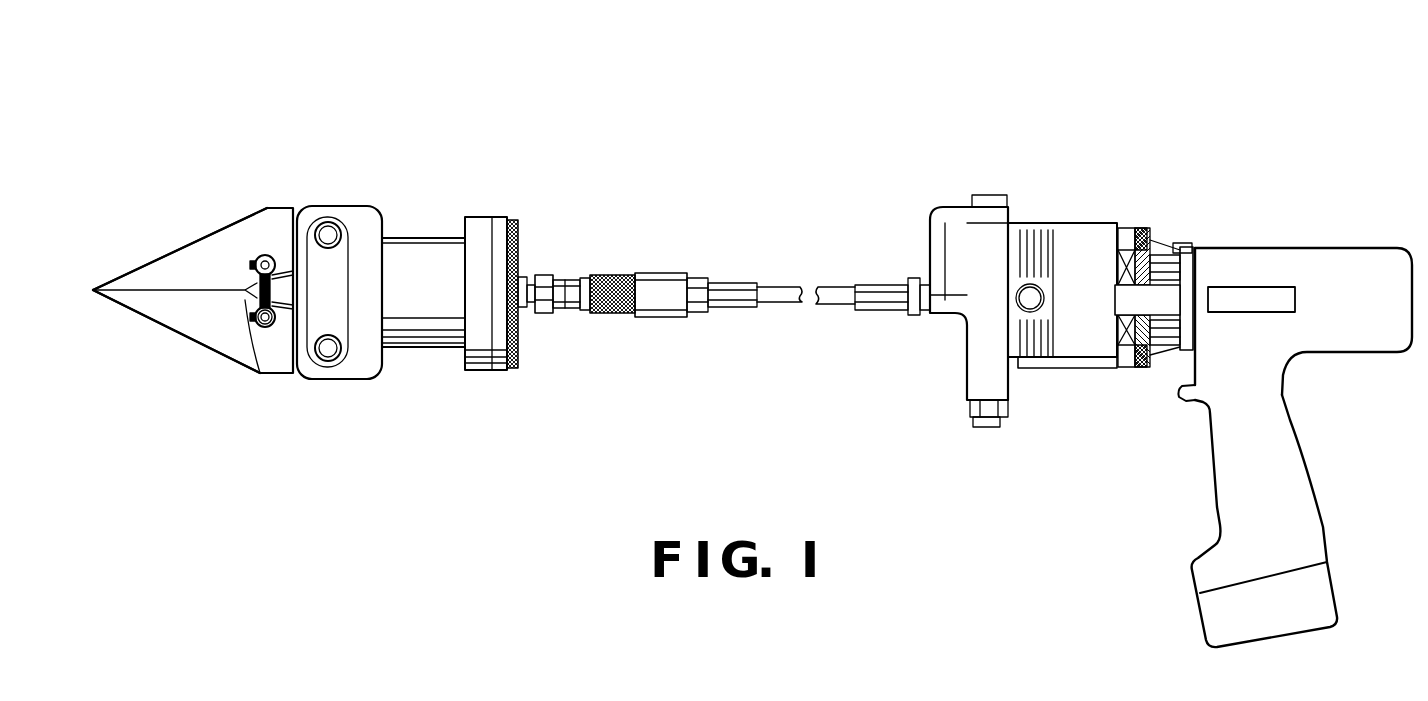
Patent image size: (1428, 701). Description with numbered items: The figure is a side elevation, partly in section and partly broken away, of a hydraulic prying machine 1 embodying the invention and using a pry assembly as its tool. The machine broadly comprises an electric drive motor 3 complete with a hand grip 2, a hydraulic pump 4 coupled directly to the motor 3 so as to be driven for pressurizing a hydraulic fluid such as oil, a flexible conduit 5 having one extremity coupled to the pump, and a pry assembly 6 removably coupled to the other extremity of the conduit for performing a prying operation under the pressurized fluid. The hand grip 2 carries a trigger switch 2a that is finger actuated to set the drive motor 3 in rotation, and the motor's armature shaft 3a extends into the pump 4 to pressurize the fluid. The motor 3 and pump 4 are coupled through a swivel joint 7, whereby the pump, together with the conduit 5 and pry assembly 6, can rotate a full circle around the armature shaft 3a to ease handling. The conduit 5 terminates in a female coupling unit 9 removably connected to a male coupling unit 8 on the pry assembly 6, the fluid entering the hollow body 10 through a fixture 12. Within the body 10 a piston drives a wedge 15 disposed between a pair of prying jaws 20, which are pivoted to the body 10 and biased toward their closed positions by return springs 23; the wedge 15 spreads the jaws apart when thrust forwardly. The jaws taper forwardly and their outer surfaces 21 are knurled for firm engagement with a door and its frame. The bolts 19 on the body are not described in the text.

The hydraulic prying machine 1 is at (968, 148).
The hand grip 2 is at (1302, 508).
The trigger switch 2a is at (1185, 350).
The electric drive motor 3 is at (1218, 260).
The armature shaft 3a is at (1160, 305).
The hydraulic pump 4 is at (1077, 242).
The flexible conduit 5 is at (772, 292).
The pry assembly 6 is at (407, 265).
The swivel joint 7 is at (1152, 243).
The male coupling unit 8 is at (568, 312).
The female coupling unit 9 is at (617, 318).
The hollow body 10 is at (430, 247).
The fixture 12 is at (533, 312).
The wedge 15 is at (288, 283).
The bolts 19 is at (330, 233).
The prying jaws 20 is at (207, 270).
The outer surfaces 21 is at (152, 262).
The return springs 23 is at (260, 368).